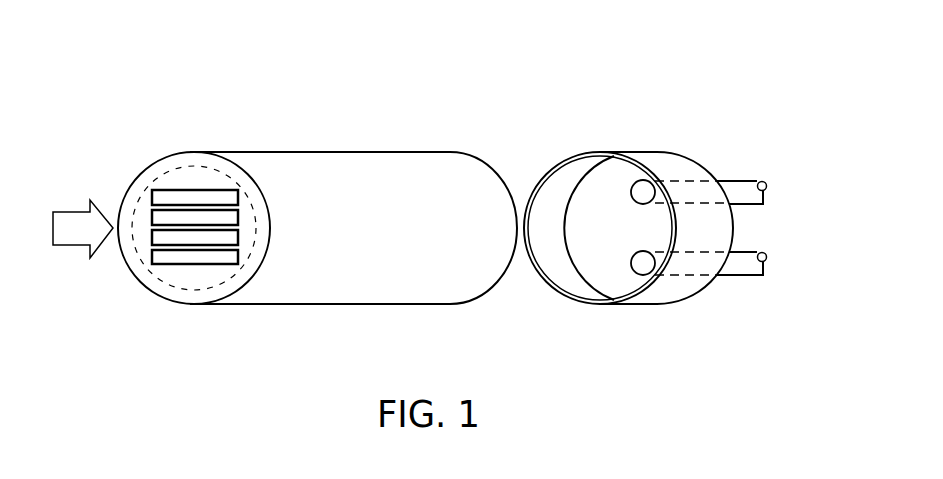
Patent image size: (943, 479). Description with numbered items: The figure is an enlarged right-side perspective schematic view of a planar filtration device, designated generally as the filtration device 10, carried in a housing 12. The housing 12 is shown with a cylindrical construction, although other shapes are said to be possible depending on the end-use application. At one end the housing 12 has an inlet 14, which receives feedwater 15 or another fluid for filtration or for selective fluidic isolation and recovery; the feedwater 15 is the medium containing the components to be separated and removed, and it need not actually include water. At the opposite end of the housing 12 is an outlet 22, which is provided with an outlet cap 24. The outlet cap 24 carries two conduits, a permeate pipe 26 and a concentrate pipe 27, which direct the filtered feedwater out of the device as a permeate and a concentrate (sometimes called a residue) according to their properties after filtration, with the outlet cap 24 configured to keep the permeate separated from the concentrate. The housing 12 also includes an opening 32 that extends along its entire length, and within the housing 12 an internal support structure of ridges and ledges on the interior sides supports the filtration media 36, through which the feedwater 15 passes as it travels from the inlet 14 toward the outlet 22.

The filtration device 10 is at (499, 56).
The housing 12 is at (334, 157).
The inlet 14 is at (183, 160).
The feedwater 15 is at (80, 238).
The outlet 22 is at (493, 171).
The outlet cap 24 is at (653, 296).
The permeate pipe 26 is at (733, 263).
The concentrate pipe 27 is at (734, 192).
The opening 32 is at (200, 280).
The filtration media 36 is at (197, 166).